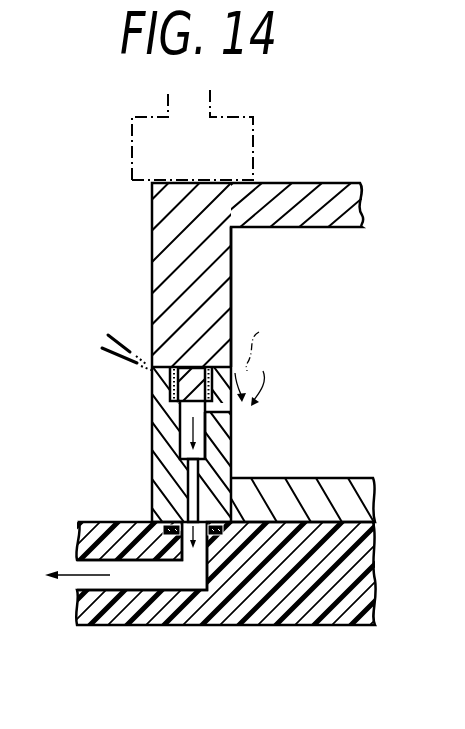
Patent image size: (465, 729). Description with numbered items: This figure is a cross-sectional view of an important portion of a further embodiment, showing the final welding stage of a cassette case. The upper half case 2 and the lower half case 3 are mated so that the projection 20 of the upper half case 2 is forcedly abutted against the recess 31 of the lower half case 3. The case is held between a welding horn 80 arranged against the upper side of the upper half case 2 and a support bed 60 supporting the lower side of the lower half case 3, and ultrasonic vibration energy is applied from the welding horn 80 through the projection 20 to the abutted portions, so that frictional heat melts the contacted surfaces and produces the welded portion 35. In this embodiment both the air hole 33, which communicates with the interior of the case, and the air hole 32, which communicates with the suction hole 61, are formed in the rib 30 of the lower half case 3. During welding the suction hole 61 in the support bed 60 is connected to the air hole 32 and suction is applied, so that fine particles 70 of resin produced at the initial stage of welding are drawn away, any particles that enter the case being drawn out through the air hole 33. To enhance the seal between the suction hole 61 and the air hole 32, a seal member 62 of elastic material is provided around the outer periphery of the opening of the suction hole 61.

The upper half case 2 is at (272, 184).
The lower half case 3 is at (377, 494).
The projection 20 is at (222, 246).
The rib 30 is at (240, 422).
The recess 31 is at (180, 418).
The air hole 32 is at (190, 492).
The air hole 33 is at (216, 432).
The welded portion 35 is at (170, 392).
The support bed 60 is at (270, 603).
The suction hole 61 is at (145, 580).
The seal member 62 is at (173, 521).
The fine particles 70 is at (193, 361).
The welding horn 80 is at (130, 156).